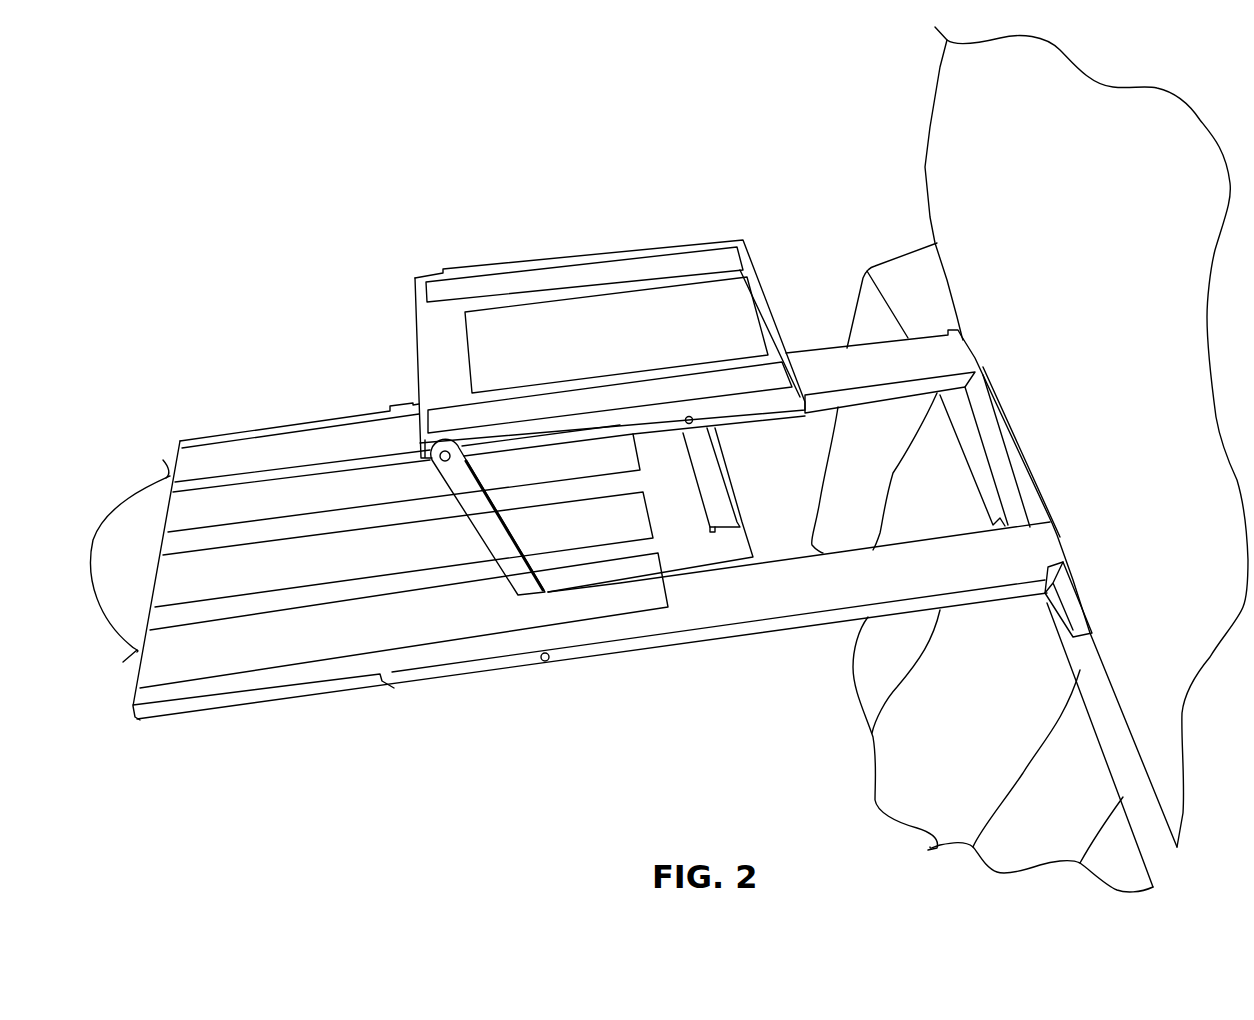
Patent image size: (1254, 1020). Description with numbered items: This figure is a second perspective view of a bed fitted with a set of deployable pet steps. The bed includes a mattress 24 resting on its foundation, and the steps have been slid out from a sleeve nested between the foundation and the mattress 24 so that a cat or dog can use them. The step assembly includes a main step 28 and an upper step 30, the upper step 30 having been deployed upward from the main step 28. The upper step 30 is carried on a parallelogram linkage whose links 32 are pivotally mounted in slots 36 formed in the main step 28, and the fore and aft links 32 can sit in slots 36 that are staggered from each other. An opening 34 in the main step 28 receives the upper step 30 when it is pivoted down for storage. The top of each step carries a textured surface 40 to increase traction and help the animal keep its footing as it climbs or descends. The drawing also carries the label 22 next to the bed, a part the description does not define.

The ground surface 22 is at (933, 733).
The wall 24 is at (1114, 312).
The front edge member 28 is at (400, 663).
The mounting box 30 is at (433, 332).
The support arm 32 is at (497, 537).
The upper frame rail 34 is at (957, 545).
The lower frame rail 36 is at (712, 568).
The slatted platform 40 is at (257, 637).